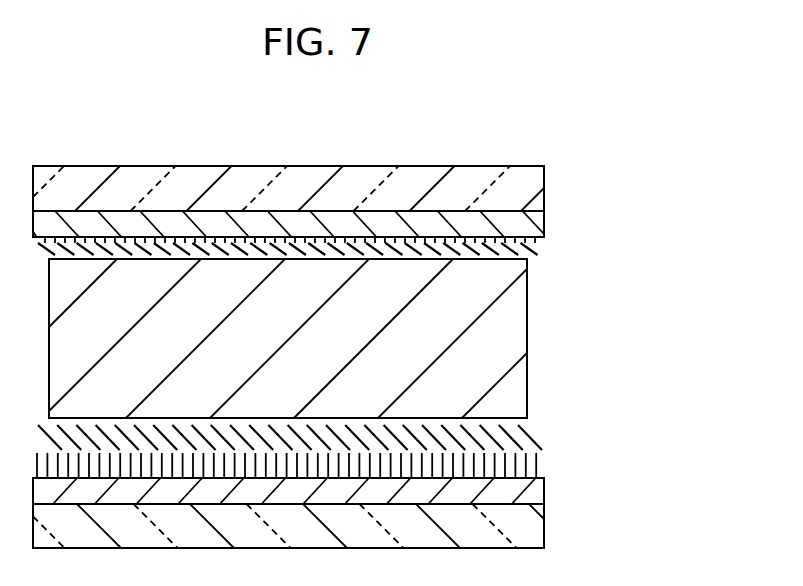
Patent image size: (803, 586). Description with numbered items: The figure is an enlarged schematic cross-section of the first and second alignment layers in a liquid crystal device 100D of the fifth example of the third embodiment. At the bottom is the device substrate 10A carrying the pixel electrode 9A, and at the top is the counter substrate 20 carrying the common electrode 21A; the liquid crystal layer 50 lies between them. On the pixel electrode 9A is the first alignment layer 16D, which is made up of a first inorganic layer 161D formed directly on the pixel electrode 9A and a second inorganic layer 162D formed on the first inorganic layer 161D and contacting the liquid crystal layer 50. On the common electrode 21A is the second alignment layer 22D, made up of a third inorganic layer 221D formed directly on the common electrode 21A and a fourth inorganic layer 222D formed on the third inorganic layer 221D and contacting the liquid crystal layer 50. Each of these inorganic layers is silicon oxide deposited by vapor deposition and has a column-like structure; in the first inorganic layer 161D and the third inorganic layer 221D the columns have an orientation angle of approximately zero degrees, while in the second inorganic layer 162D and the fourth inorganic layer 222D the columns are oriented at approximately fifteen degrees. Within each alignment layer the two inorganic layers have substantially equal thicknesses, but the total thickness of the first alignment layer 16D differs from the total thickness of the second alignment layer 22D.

The liquid crystal device 100D is at (530, 113).
The counter substrate 20 is at (535, 182).
The common electrode 21A is at (540, 222).
The second alignment layer 22D is at (402, 266).
The third inorganic layer 221D is at (548, 240).
The fourth inorganic layer 222D is at (548, 254).
The liquid crystal layer 50 is at (503, 333).
The first alignment layer 16D is at (397, 436).
The second inorganic layer 162D is at (542, 428).
The first inorganic layer 161D is at (543, 462).
The pixel electrode 9A is at (535, 493).
The device substrate 10A is at (535, 531).